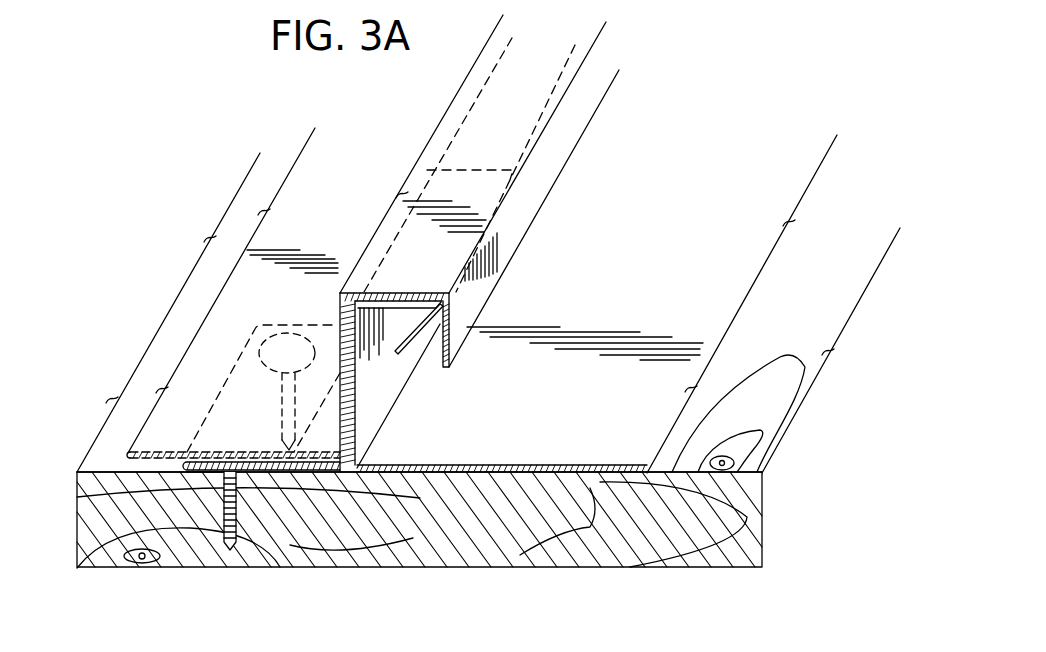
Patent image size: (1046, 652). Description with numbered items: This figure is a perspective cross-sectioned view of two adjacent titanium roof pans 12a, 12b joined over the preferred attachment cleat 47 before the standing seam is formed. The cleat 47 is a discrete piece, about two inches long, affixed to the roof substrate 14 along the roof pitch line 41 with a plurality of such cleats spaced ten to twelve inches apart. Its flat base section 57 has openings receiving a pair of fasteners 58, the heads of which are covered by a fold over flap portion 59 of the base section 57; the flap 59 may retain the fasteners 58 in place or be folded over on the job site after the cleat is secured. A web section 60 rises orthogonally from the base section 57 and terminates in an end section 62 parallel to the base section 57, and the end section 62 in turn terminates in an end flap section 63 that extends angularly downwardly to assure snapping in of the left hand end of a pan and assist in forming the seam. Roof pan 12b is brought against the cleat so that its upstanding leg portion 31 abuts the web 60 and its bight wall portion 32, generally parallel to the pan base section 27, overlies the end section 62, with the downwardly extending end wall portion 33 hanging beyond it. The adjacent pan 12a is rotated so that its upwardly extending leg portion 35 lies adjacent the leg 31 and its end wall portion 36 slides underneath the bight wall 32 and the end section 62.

The roof pan 12a is at (568, 475).
The roof pan 12b is at (198, 372).
The roof substrate 14 is at (682, 562).
The pan base section 27 is at (599, 396).
The upstanding leg portion 31 is at (338, 313).
The bight wall portion 32 is at (430, 258).
The end wall portion 33 is at (450, 340).
The upwardly extending leg portion 35 is at (363, 408).
The end wall portion 36 is at (372, 293).
The pitch line 41 is at (297, 474).
The attachment cleat 47 is at (207, 474).
The flat base section 57 is at (293, 473).
The fasteners 58 is at (277, 325).
The fold over flap portion 59 is at (192, 453).
The web section 60 is at (352, 442).
The end section 62 is at (415, 295).
The end flap section 63 is at (402, 343).